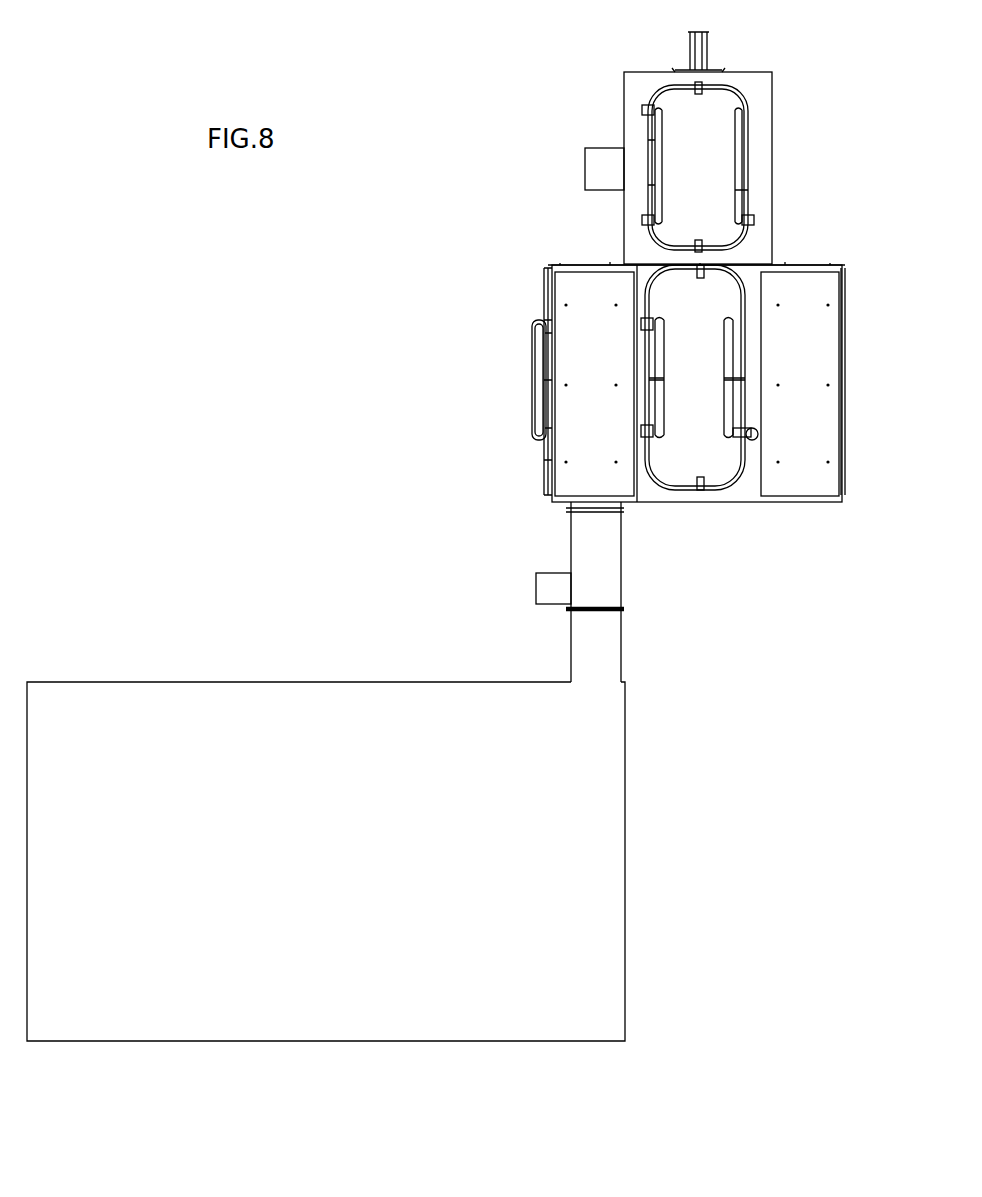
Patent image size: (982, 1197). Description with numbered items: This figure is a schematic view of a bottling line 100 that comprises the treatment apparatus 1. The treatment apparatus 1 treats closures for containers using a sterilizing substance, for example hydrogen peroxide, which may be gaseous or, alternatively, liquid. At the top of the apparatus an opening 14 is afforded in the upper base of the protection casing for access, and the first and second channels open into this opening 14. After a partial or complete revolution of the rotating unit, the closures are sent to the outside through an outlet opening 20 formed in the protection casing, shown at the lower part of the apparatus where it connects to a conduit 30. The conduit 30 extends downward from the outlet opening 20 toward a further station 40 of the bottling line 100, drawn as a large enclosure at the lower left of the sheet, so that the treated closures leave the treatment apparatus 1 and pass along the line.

The installation 100 is at (277, 386).
The treatment apparatus 1 is at (522, 380).
The opening 14 is at (712, 68).
The outlet opening 20 is at (596, 505).
The pipe 30 is at (560, 541).
The tank 40 is at (325, 672).